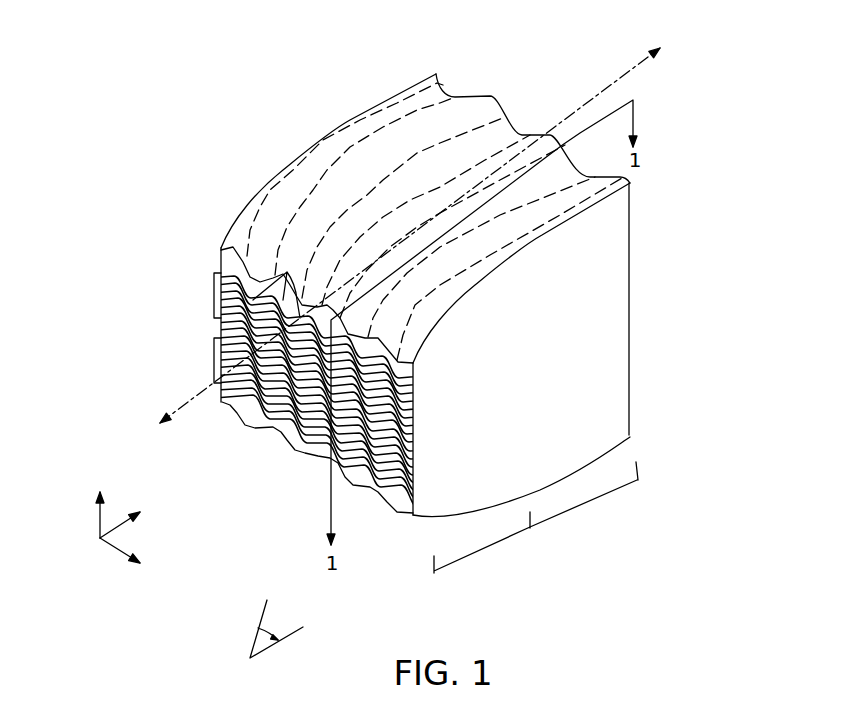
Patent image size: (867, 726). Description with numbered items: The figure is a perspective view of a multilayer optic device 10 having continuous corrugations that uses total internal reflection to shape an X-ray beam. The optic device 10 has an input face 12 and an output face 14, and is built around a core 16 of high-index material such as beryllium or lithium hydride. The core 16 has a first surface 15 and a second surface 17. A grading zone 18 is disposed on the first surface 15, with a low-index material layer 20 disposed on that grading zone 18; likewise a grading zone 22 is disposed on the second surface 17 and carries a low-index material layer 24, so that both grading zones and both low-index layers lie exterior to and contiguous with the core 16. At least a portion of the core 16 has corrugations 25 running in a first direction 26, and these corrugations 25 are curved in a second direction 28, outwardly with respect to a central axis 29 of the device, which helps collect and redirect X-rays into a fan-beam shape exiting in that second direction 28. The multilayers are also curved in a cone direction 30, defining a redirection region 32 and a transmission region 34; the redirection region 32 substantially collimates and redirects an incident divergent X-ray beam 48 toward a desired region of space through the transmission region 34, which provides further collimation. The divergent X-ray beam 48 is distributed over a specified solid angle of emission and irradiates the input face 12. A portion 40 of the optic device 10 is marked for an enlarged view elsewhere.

The multilayer optic device 10 is at (195, 112).
The input face 12 is at (232, 333).
The output face 14 is at (630, 312).
The first surface 15 is at (408, 438).
The core 16 is at (383, 420).
The second surface 17 is at (410, 453).
The grading zone 18 is at (214, 296).
The low-index material layer 20 is at (232, 264).
The grading zone 22 is at (214, 361).
The low-index material layer 24 is at (267, 423).
The corrugations 25 is at (277, 282).
The first direction 26 is at (117, 553).
The second direction 28 is at (117, 522).
The central axis 29 is at (645, 64).
The cone direction 30 is at (100, 515).
The redirection region 32 is at (482, 553).
The transmission region 34 is at (583, 507).
The portion 40 is at (518, 384).
The divergent X-ray beam 48 is at (233, 635).